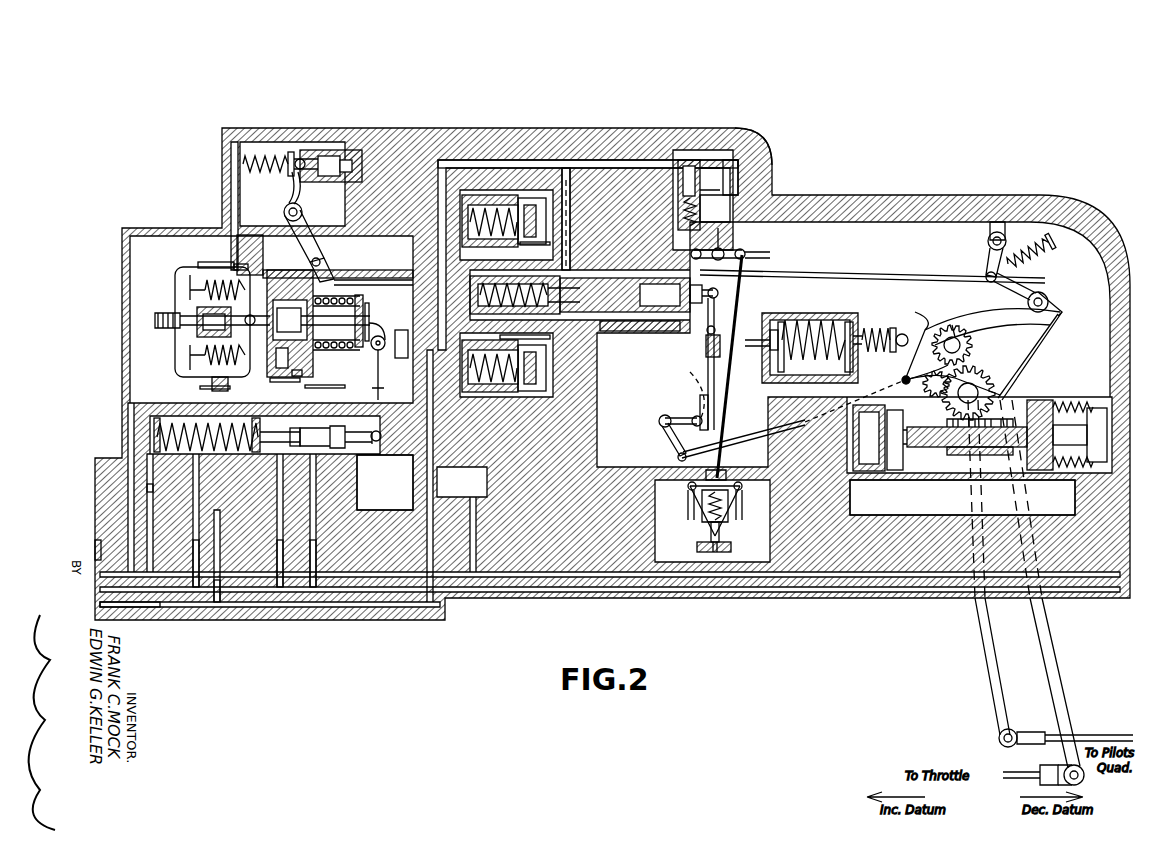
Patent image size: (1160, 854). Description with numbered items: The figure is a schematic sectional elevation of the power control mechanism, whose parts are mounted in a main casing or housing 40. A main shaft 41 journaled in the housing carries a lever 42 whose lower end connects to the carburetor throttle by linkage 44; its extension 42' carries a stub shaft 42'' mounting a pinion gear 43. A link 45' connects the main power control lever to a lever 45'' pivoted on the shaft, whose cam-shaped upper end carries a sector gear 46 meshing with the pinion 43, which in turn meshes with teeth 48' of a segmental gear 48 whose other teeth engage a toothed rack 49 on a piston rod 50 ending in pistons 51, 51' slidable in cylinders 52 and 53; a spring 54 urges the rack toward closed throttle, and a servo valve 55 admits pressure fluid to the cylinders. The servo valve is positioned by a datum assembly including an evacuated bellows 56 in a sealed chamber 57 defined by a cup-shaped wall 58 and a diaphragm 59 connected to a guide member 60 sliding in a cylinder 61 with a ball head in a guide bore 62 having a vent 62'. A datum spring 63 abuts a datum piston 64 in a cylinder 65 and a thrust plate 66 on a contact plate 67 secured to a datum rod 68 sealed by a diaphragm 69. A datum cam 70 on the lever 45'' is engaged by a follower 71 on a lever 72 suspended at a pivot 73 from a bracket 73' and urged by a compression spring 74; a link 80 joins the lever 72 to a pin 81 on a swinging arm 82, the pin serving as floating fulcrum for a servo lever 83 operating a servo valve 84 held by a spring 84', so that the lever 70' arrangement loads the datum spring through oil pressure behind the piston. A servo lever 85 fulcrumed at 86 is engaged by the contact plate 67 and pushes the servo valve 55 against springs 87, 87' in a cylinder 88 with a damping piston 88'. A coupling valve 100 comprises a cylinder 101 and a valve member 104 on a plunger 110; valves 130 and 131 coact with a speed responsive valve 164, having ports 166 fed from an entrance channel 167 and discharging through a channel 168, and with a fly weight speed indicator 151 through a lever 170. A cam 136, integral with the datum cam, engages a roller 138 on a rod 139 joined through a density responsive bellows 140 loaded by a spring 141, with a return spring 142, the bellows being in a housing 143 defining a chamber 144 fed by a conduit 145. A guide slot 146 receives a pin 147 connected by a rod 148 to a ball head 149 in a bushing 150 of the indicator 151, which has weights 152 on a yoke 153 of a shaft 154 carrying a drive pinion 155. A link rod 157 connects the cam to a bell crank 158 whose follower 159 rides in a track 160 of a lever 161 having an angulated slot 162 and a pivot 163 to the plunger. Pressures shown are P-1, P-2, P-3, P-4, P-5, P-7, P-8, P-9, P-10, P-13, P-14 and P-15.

The main casing or housing 40 is at (780, 165).
The main shaft 41 is at (985, 392).
The throttle lever 42 is at (1048, 584).
The lever extension 42' is at (1035, 356).
The stub shaft 42'' is at (942, 314).
The pinion gear 43 is at (998, 320).
The throttle linkage 44 is at (1020, 773).
The link 45' is at (1075, 721).
The power control lever 45'' is at (978, 573).
The sector gear 46 is at (968, 330).
The segmental gear 48 is at (972, 384).
The gear teeth 48' is at (930, 383).
The toothed rack 49 is at (960, 447).
The piston rod 50 is at (930, 472).
The piston 51 is at (1048, 420).
The piston 51' is at (868, 438).
The cylinder 52 is at (1080, 398).
The cylinder 53 is at (890, 473).
The spring 54 is at (1060, 470).
The servo valve 55 is at (372, 440).
The evacuated bellows or aneroid 56 is at (192, 270).
The sealed chamber 57 is at (190, 372).
The cup-shaped wall 58 is at (205, 268).
The diaphragm 59 is at (240, 270).
The cup-shaped guide member 60 is at (279, 358).
The cylinder 61 is at (192, 286).
The guide bore or passage 62 is at (200, 336).
The vent 62' is at (134, 321).
The datum spring 63 is at (340, 300).
The datum piston 64 is at (305, 350).
The cylinder 65 is at (300, 375).
The thrust plate 66 is at (365, 308).
The contact plate 67 is at (372, 312).
The datum rod or shaft 68 is at (214, 322).
The sealing diaphragm 69 is at (285, 315).
The datum cam 70 is at (1061, 298).
The arm 70' is at (979, 263).
The follower 71 is at (1052, 298).
The follower lever 72 is at (1020, 290).
The pivot 73 is at (971, 239).
The depending bracket 73' is at (1016, 204).
The compression spring 74 is at (1028, 250).
The link 80 is at (365, 292).
The pin 81 is at (308, 258).
The swinging arm 82 is at (288, 216).
The servo lever 83 is at (292, 189).
The servo valve 84 is at (328, 140).
The servo valve spring 84' is at (268, 132).
The servo lever 85 is at (380, 390).
The fulcrum 86 is at (375, 352).
The spring 87 is at (230, 437).
The spring 87' is at (286, 386).
The cylinder 88 is at (174, 428).
The damping piston 88' is at (204, 388).
The coupling valve 100 is at (660, 335).
The cylinder 101 is at (673, 322).
The valve member 104 is at (598, 333).
The plunger 110 is at (670, 268).
The valve 130 is at (516, 368).
The valve 131 is at (512, 222).
The cam 136 is at (900, 380).
The follower or roller 138 is at (896, 330).
The rod 139 is at (855, 330).
The density responsive bellows 140 is at (774, 340).
The spring 141 is at (805, 320).
The return spring 142 is at (874, 326).
The housing 143 is at (835, 320).
The chamber 144 is at (810, 352).
The conduit 145 is at (820, 320).
The guide slot 146 is at (700, 305).
The pin 147 is at (705, 345).
The rod 148 is at (722, 396).
The ball head 149 is at (722, 480).
The bushing 150 is at (728, 497).
The fly weight speed indicator 151 is at (699, 533).
The weights 152 is at (690, 498).
The yoke 153 is at (722, 512).
The shaft 154 is at (730, 548).
The drive pinion 155 is at (715, 545).
The link rod 157 is at (738, 440).
The bell crank 158 is at (665, 433).
The follower 159 is at (695, 417).
The track or groove 160 is at (700, 392).
The lever 161 is at (718, 380).
The angulated slot 162 is at (740, 330).
The pivot connection 163 is at (767, 255).
The speed responsive valve 164 is at (728, 190).
The ports 166 is at (765, 198).
The entrance channel 167 is at (790, 178).
The channel 168 is at (724, 162).
The lever 170 is at (735, 253).
The engine manifold air pressure P-1 is at (96, 550).
The engine oil pressure P-2 is at (182, 590).
The drain oil pressure P-3 is at (385, 482).
The throttle opening piston pressure P-4 is at (300, 575).
The throttle closing piston pressure P-5 is at (355, 588).
The metered oil to low coupling P-7 is at (560, 350).
The feed oil to low coupling P-8 is at (152, 612).
The metered oil to high coupling P-9 is at (535, 236).
The feed oil to high coupling P-10 is at (226, 605).
The feedback damping piston pressure P-13 is at (150, 488).
The aneroid chamber pressure P-14 is at (219, 379).
The datum piston pressure P-15 is at (326, 394).